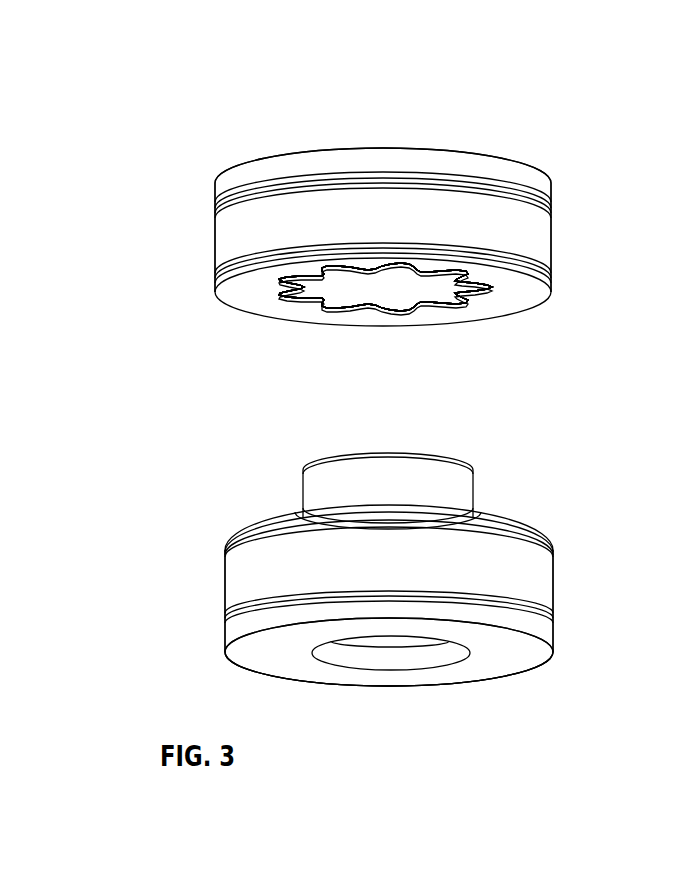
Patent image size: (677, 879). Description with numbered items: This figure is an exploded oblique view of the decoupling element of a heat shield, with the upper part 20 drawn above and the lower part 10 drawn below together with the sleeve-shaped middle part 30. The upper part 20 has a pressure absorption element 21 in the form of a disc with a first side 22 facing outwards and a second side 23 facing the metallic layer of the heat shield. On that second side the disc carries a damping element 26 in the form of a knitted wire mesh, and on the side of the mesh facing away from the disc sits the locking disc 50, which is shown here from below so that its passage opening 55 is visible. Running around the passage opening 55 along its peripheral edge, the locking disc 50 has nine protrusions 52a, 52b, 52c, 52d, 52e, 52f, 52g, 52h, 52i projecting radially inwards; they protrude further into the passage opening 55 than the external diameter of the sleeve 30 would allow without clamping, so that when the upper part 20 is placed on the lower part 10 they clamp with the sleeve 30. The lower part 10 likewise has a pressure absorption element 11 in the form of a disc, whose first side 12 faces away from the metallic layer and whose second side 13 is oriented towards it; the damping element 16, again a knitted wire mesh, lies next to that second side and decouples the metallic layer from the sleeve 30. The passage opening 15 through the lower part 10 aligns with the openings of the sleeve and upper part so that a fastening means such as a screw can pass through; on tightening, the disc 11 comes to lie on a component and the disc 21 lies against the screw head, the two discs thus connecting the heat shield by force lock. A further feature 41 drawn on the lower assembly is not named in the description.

The lower part 10 is at (467, 668).
The pressure absorption element 11 is at (545, 630).
The first side 12 is at (522, 655).
The second side 13 is at (542, 615).
The passage opening 15 is at (393, 657).
The damping element 16 is at (242, 585).
The upper part 20 is at (538, 232).
The pressure absorption element 21 is at (508, 170).
The first side 22 is at (447, 150).
The second side 23 is at (532, 190).
The damping element 26 is at (228, 233).
The middle part 30 is at (457, 490).
The flange ring 41 is at (472, 518).
The locking disc 50 is at (247, 293).
The protrusion 52a is at (285, 297).
The protrusion 52b is at (332, 307).
The protrusion 52c is at (400, 310).
The protrusion 52d is at (465, 303).
The protrusion 52e is at (487, 287).
The protrusion 52f is at (460, 273).
The protrusion 52g is at (397, 267).
The protrusion 52h is at (338, 268).
The protrusion 52i is at (290, 275).
The passage opening 55 is at (372, 293).